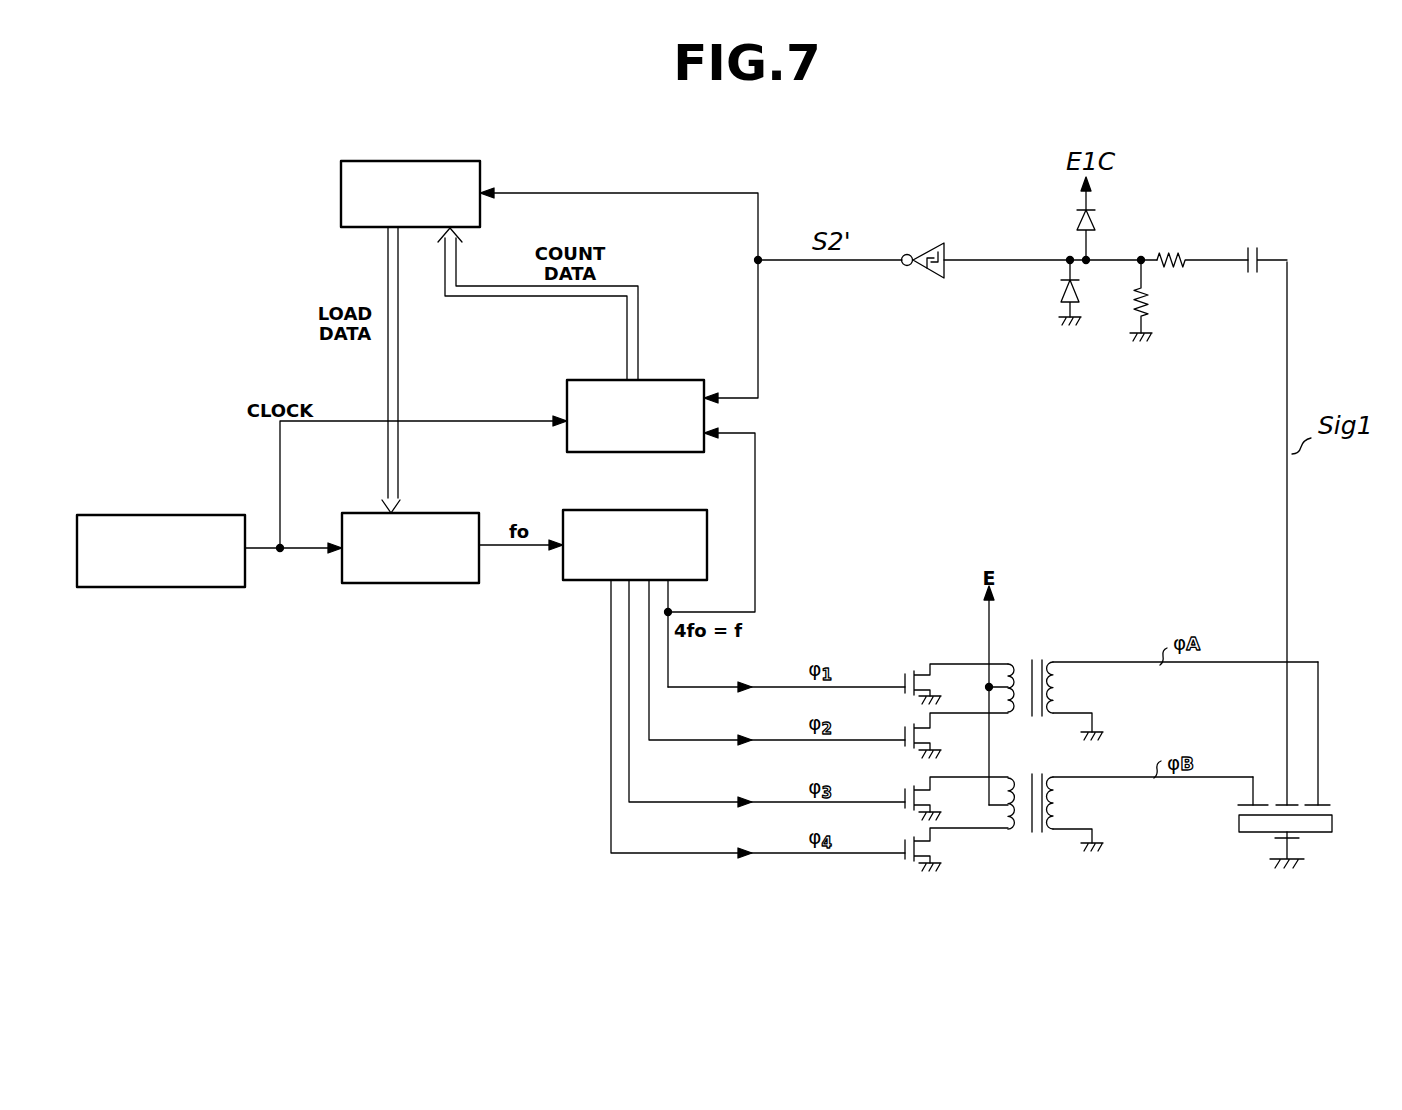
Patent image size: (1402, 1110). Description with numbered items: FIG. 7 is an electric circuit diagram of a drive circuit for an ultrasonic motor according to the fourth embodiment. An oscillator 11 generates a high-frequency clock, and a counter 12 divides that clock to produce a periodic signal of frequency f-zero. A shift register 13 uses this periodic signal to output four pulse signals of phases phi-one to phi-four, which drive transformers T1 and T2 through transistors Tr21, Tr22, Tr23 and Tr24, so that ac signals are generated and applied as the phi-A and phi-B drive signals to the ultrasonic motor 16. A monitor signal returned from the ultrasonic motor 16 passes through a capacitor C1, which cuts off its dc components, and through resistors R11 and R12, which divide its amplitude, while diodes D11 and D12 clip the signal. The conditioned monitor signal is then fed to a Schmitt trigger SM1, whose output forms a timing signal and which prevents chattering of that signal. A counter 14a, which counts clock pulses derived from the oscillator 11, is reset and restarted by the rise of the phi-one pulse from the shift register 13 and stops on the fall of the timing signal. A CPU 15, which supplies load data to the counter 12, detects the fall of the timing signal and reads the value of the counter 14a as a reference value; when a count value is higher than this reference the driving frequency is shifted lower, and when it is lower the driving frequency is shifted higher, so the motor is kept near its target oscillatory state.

The oscillator 11 is at (189, 515).
The counter 12 is at (447, 513).
The shift register 13 is at (650, 510).
The counter 14a is at (581, 380).
The CPU 15 is at (341, 193).
The ultrasonic motor 16 is at (1248, 823).
The transistor Tr21 is at (903, 673).
The transistor Tr22 is at (930, 730).
The transistor Tr23 is at (918, 797).
The transistor Tr24 is at (904, 862).
The transformer T1 is at (1037, 662).
The transformer T2 is at (1035, 833).
The Schmitt trigger SM1 is at (934, 253).
The diode D11 is at (1093, 223).
The diode D12 is at (1060, 287).
The resistor R11 is at (1170, 252).
The resistor R12 is at (1148, 293).
The capacitor C1 is at (1253, 241).